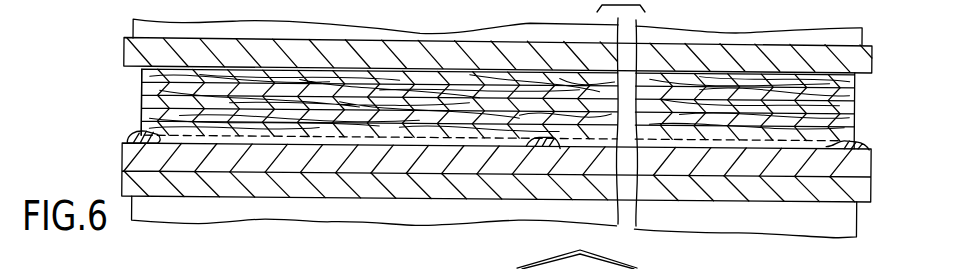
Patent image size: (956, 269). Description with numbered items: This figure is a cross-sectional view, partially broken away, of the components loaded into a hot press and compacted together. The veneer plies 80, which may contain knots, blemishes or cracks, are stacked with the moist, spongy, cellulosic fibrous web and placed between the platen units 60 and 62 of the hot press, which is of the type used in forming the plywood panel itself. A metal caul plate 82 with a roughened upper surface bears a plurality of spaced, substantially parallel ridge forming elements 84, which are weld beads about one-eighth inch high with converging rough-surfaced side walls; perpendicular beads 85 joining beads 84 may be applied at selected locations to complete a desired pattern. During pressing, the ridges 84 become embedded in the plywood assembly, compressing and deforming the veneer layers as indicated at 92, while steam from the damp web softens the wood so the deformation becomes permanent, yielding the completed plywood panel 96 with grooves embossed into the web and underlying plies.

The platen unit 60 is at (446, 40).
The platen unit 62 is at (337, 200).
The veneer plies 80 is at (283, 132).
The metal caul plate 82 is at (220, 160).
The ridge forming elements 84 is at (126, 138).
The perpendicular beads 85 is at (856, 109).
The compressed and deformed veneer layers 92 is at (560, 150).
The completed plywood panel 96 is at (131, 66).